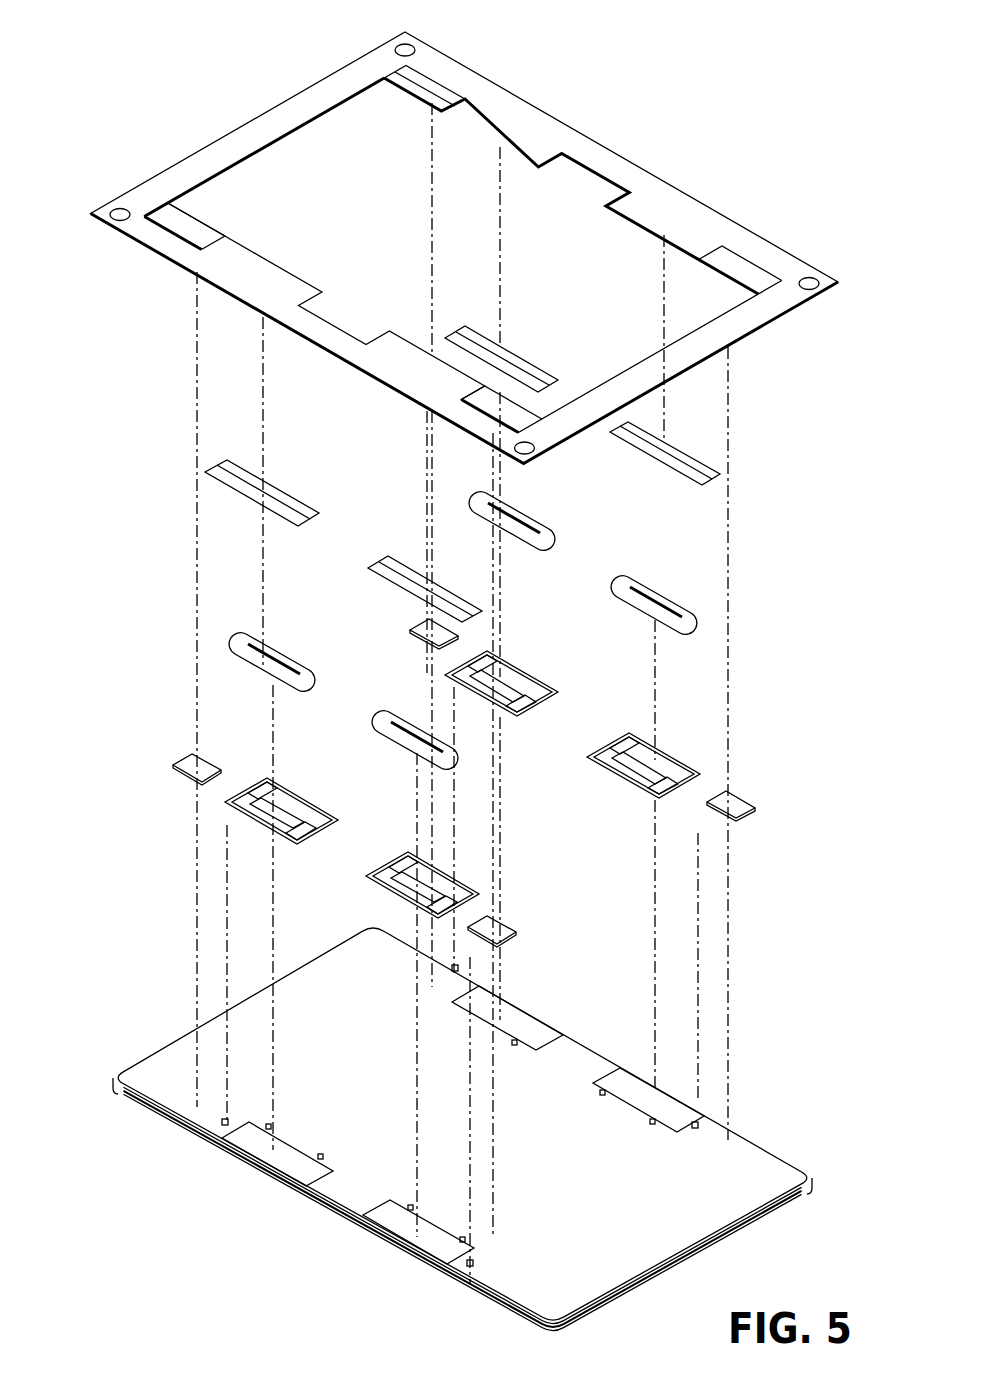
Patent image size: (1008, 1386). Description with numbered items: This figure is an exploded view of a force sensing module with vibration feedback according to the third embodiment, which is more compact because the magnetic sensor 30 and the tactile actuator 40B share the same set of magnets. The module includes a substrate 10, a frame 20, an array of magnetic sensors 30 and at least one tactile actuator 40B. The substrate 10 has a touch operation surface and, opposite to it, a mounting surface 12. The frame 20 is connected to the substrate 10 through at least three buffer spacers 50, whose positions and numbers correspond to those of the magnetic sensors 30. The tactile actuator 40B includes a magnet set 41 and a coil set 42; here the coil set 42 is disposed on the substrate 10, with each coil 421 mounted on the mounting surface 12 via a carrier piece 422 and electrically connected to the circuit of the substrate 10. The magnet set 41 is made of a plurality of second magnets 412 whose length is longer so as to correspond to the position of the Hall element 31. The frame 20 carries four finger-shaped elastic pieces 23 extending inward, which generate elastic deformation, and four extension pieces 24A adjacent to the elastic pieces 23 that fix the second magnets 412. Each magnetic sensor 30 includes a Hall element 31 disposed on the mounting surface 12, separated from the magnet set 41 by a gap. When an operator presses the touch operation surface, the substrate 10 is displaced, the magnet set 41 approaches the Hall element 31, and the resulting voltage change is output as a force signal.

The substrate 10 is at (480, 997).
The mounting surface 12 is at (340, 1195).
The frame 20 is at (457, 255).
The elastic piece 23 is at (440, 98).
The extension piece 24A is at (495, 123).
The magnetic sensor 30 is at (460, 964).
The Hall element 31 is at (227, 825).
The tactile actuator 40B is at (466, 622).
The magnet set 41 is at (463, 474).
The second magnet 412 is at (235, 466).
The coil set 42 is at (462, 705).
The coil 421 is at (247, 636).
The carrier piece 422 is at (255, 777).
The buffer spacer 50 is at (180, 760).